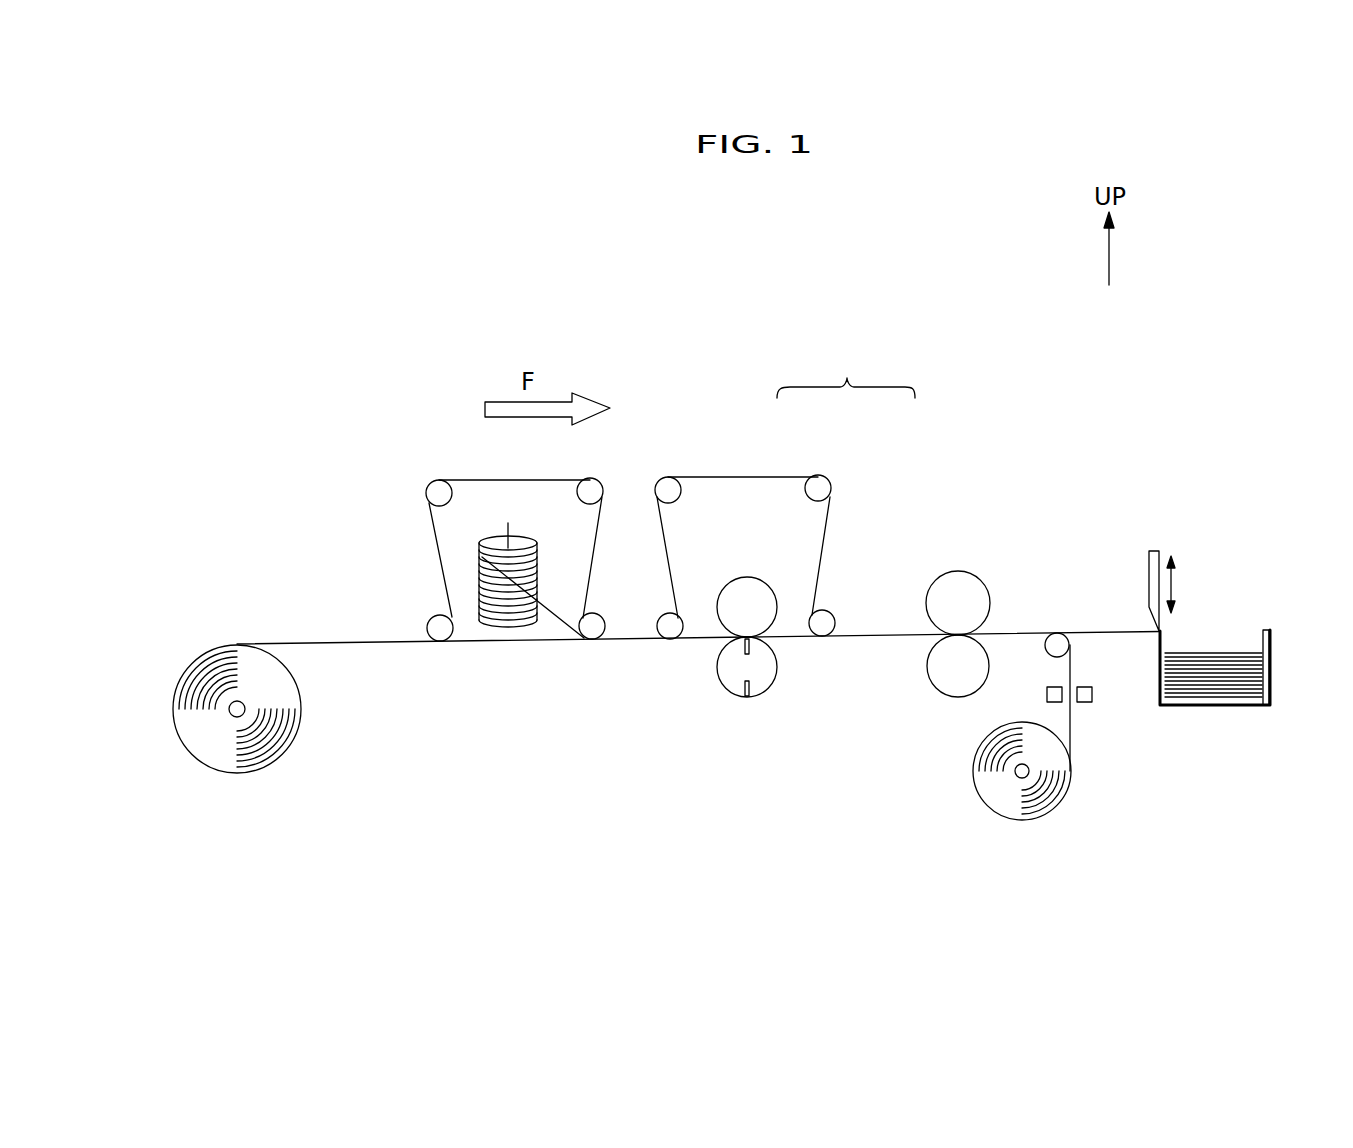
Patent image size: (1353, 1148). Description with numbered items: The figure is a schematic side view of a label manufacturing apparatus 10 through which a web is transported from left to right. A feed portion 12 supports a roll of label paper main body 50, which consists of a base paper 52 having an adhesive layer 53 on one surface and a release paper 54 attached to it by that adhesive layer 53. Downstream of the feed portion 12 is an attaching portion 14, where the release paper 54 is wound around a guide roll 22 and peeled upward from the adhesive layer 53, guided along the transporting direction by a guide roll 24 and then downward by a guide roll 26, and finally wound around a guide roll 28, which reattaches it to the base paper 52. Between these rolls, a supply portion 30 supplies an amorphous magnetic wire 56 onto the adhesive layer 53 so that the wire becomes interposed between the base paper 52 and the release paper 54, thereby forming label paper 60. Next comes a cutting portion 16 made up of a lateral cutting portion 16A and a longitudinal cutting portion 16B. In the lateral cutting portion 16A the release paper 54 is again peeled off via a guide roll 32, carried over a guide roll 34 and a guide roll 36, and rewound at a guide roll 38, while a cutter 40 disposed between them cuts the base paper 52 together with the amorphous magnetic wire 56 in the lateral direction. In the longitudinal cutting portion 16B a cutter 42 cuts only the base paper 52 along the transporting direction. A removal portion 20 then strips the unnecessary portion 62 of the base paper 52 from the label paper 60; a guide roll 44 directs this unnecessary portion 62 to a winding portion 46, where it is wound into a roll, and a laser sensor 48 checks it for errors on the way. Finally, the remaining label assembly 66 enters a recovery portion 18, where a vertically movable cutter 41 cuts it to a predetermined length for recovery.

The label manufacturing apparatus 10 is at (286, 458).
The feed portion 12 is at (237, 778).
The attaching portion 14 is at (470, 470).
The cutting portion 16 is at (846, 371).
The lateral cutting portion 16A is at (758, 470).
The longitudinal cutting portion 16B is at (946, 570).
The recovery portion 18 is at (1178, 683).
The removal portion 20 is at (1075, 760).
The guide roll 22 is at (436, 624).
The guide roll 24 is at (433, 488).
The guide roll 26 is at (595, 488).
The guide roll 28 is at (597, 622).
The supply portion 30 is at (518, 531).
The guide roll 32 is at (668, 622).
The guide roll 34 is at (667, 486).
The guide roll 36 is at (824, 484).
The guide roll 38 is at (827, 619).
The cutter 40 is at (752, 648).
The cutter 41 is at (1152, 550).
The cutter 42 is at (935, 638).
The guide roll 44 is at (1050, 646).
The winding portion 46 is at (1022, 823).
The laser sensor 48 is at (1055, 687).
The label paper main body 50 is at (352, 643).
The base paper 52 is at (512, 641).
The adhesive layer 53 is at (563, 641).
The release paper 54 is at (432, 552).
The amorphous magnetic wire 56 is at (547, 606).
The label paper 60 is at (886, 636).
The unnecessary portion 62 is at (1072, 731).
The label assembly 66 is at (1117, 633).